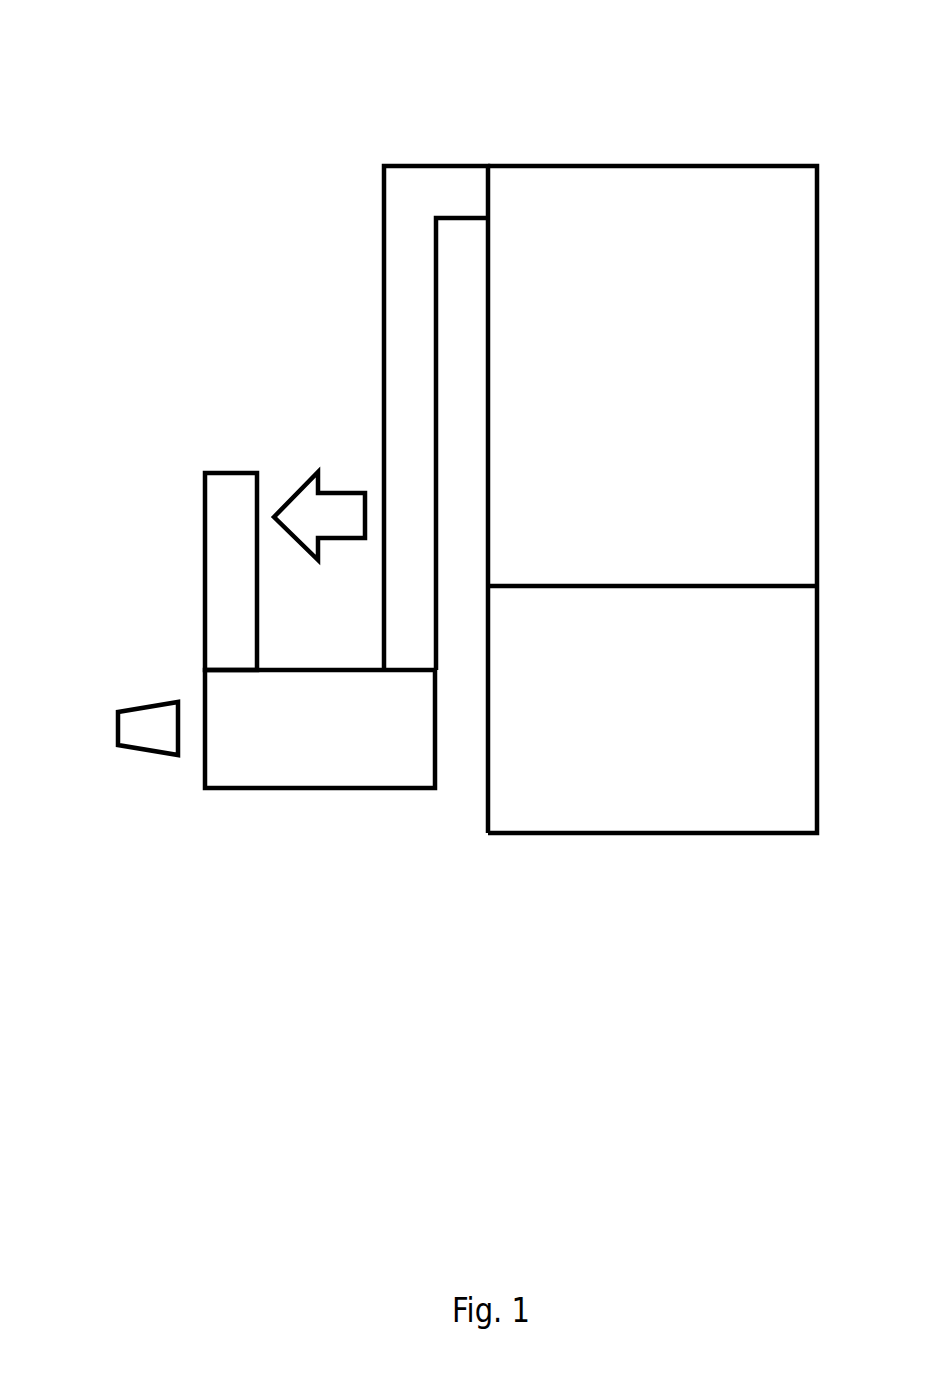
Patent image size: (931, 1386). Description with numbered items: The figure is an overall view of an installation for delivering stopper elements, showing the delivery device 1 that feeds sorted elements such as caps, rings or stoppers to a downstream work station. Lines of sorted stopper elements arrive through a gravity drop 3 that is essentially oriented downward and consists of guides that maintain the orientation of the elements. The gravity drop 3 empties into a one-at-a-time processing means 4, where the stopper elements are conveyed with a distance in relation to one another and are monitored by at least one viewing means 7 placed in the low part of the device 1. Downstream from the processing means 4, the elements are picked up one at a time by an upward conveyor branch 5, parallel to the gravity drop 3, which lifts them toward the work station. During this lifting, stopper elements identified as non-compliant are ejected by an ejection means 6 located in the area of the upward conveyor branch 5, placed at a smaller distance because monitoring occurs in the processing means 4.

The device for delivery of sorted elements 1 is at (313, 287).
The gravity drop 3 is at (393, 202).
The one-at-a-time processing means 4 is at (270, 742).
The upward conveyor branch 5 is at (228, 558).
The ejection means 6 is at (313, 503).
The viewing means 7 is at (160, 725).